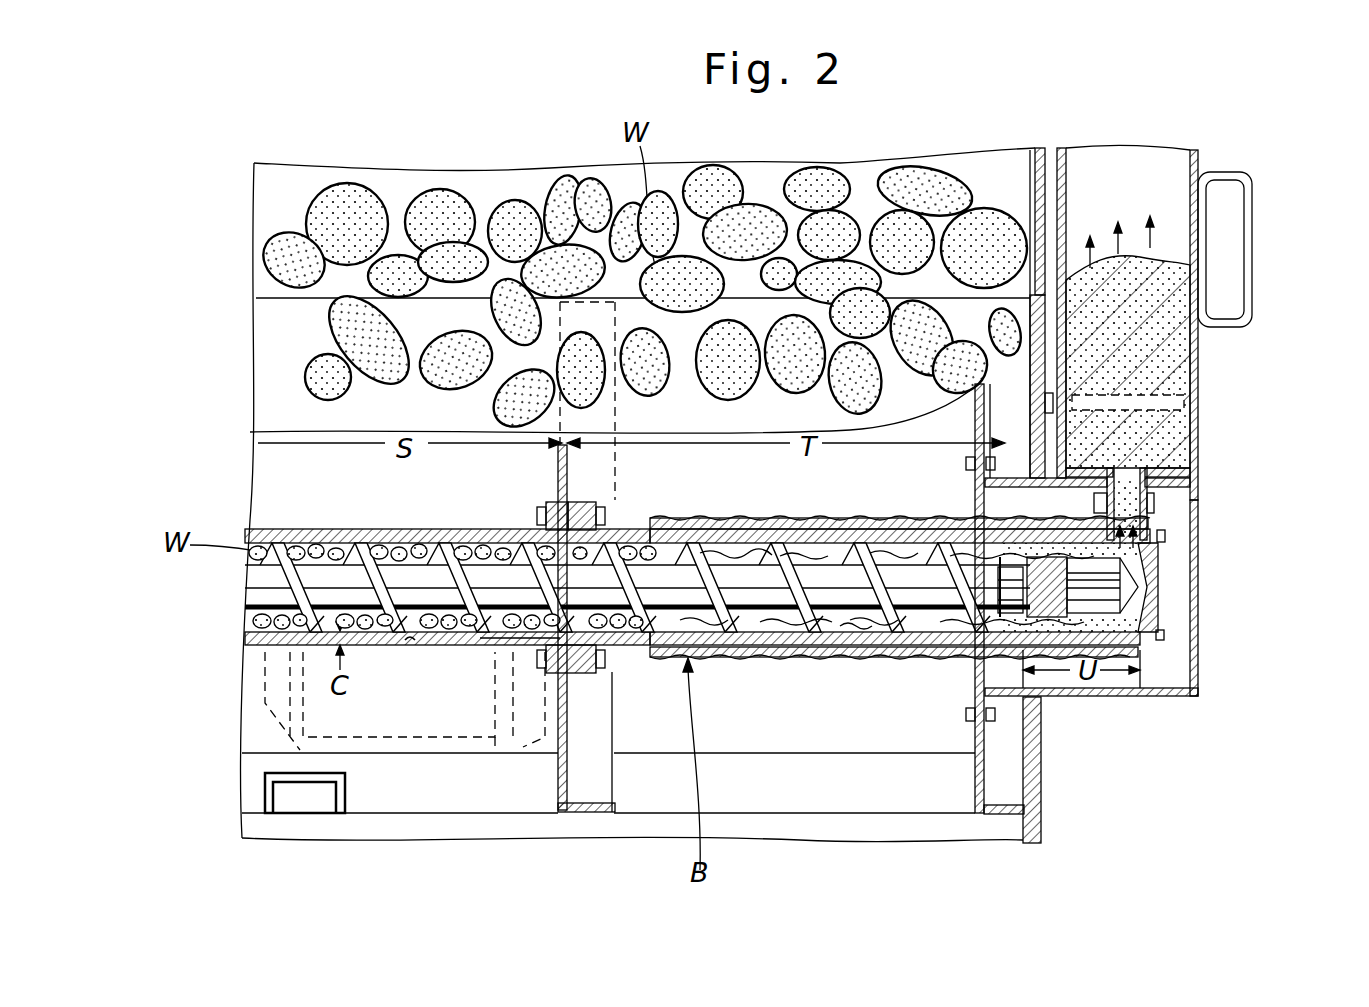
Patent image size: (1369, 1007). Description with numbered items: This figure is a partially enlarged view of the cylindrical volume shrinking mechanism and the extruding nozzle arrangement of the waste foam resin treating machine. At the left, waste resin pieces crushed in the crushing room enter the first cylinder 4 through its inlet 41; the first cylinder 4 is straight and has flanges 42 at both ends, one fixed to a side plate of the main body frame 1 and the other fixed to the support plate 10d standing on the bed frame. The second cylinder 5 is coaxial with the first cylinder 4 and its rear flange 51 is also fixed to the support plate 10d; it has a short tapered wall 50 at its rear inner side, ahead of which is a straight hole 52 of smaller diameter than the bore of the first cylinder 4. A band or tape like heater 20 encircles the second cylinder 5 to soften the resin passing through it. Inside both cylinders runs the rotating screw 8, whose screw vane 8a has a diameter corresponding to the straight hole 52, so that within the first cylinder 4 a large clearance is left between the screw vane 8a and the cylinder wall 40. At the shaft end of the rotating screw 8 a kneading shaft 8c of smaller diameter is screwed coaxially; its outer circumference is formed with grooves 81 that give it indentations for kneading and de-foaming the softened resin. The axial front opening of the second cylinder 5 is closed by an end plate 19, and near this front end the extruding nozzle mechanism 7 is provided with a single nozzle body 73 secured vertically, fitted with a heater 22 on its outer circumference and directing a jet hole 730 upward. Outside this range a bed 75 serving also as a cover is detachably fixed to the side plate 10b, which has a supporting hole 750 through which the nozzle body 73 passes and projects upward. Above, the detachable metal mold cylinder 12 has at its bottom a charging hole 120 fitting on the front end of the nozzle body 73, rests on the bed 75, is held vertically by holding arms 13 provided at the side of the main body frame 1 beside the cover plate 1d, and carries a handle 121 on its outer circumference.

The main body frame 1 is at (1052, 800).
The cover plate 1d is at (1046, 188).
The handle 121 is at (1250, 287).
The metal mold cylinder 12 is at (1200, 346).
The holding arms 13 is at (1190, 378).
The charging hole 120 is at (1122, 475).
The jet hole 730 is at (1110, 515).
The heater 22 is at (1152, 508).
The nozzle body 73 is at (1152, 522).
The extruding nozzle mechanism 7 is at (1205, 533).
The bed 75 is at (1198, 550).
The end plate 19 is at (1140, 587).
The grooves 81 is at (1150, 602).
The kneading shaft 8c is at (1118, 640).
The side plate 10b is at (975, 770).
The support plate 10d is at (558, 762).
The tapered wall 50 is at (620, 647).
The second cylinder 5 is at (735, 646).
The heater 20 is at (785, 658).
The straight hole 52 is at (862, 630).
The screw vane 8a is at (505, 646).
The first cylinder 4 is at (381, 646).
The cylinder wall 40 is at (412, 645).
The inlet 41 is at (383, 529).
The flanges 42 is at (550, 502).
The flange 51 is at (600, 504).
The rotating screw 8 is at (744, 583).
The supporting hole 750 is at (997, 445).